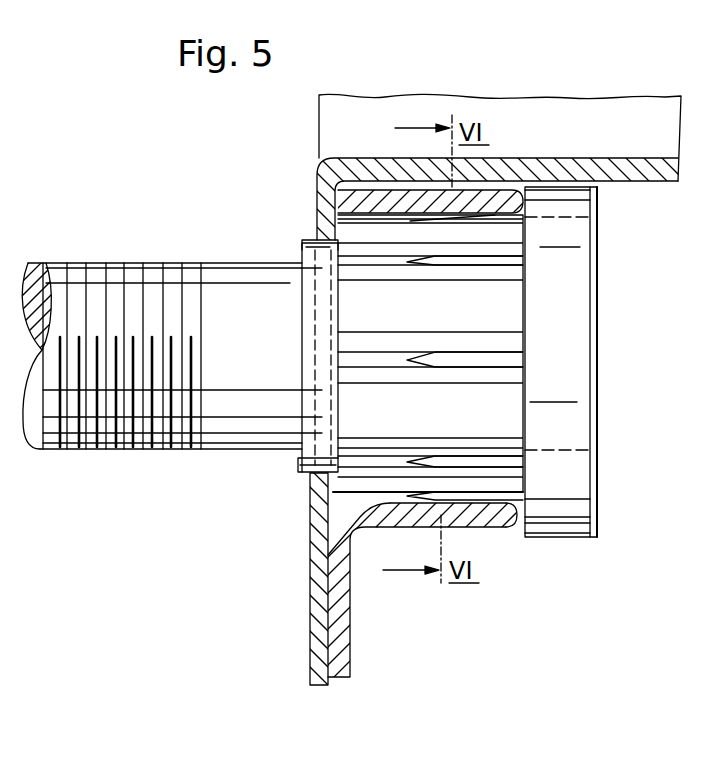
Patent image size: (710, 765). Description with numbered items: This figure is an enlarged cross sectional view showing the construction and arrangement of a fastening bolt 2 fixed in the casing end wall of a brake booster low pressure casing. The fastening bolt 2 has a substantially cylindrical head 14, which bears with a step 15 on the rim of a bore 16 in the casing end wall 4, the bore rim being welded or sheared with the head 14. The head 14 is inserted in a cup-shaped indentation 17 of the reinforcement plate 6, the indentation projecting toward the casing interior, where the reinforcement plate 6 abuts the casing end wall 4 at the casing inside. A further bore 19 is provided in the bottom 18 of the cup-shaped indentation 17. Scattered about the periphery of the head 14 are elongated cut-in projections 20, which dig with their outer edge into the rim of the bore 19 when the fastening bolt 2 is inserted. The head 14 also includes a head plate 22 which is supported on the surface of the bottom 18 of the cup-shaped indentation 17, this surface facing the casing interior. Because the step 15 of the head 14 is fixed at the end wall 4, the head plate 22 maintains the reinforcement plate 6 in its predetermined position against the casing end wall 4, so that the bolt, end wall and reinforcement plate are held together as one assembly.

The fastening bolt 2 is at (109, 272).
The end wall 4 is at (318, 594).
The reinforcement plate 6 is at (333, 633).
The head 14 is at (498, 303).
The step 15 is at (299, 476).
The bore 16 is at (303, 246).
The cup-shaped indentation 17 is at (478, 522).
The bottom 18 is at (512, 527).
The bore 19 is at (507, 496).
The cut-in projection 20 is at (477, 258).
The head plate 22 is at (573, 350).